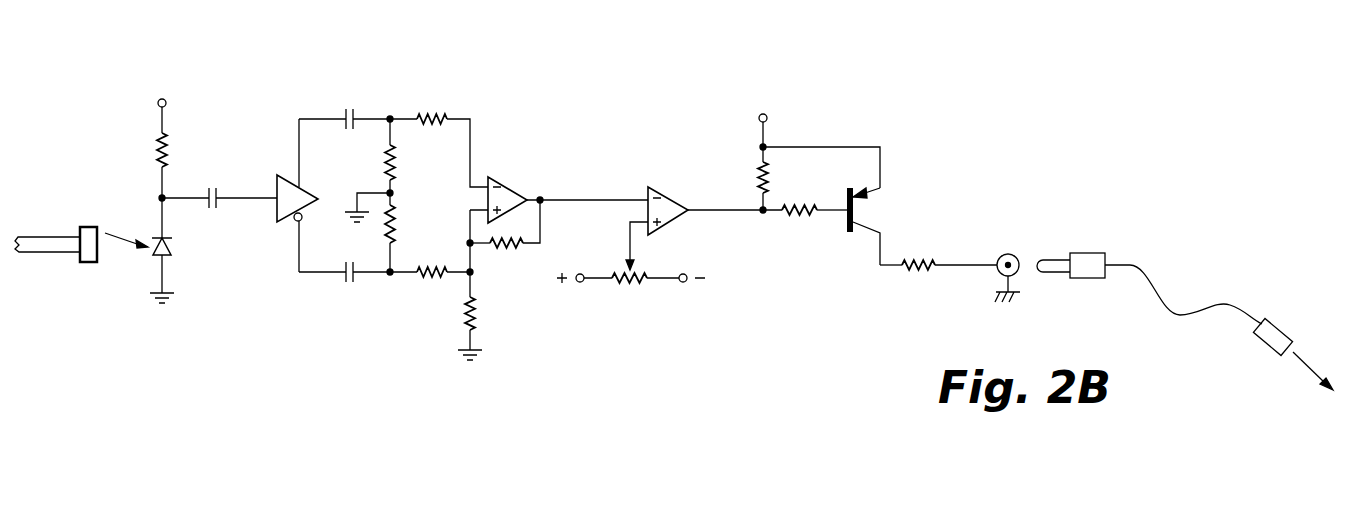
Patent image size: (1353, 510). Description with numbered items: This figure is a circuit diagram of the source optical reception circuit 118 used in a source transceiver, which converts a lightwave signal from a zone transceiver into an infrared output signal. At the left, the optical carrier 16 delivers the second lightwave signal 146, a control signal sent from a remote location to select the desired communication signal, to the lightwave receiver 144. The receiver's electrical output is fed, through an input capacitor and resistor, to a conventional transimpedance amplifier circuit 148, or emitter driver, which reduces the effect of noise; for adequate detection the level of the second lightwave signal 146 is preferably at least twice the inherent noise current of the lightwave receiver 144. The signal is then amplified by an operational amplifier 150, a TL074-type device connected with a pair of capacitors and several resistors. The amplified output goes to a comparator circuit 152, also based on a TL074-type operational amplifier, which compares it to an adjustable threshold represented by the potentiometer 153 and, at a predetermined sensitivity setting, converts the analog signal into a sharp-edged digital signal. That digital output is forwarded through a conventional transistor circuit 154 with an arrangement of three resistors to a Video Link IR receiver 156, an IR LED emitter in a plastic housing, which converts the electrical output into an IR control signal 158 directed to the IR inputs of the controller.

The optical carrier 16 is at (42, 253).
The source optical reception circuit 118 is at (748, 320).
The lightwave receiver 144 is at (167, 240).
The second lightwave signal 146 is at (124, 242).
The transimpedance amplifier circuit 148 is at (280, 227).
The operational amplifier 150 is at (502, 185).
The comparator circuit 152 is at (665, 195).
The potentiometer 153 is at (627, 286).
The transistor circuit 154 is at (868, 212).
The Video Link IR receiver 156 is at (1083, 258).
The IR control signal 158 is at (1305, 366).